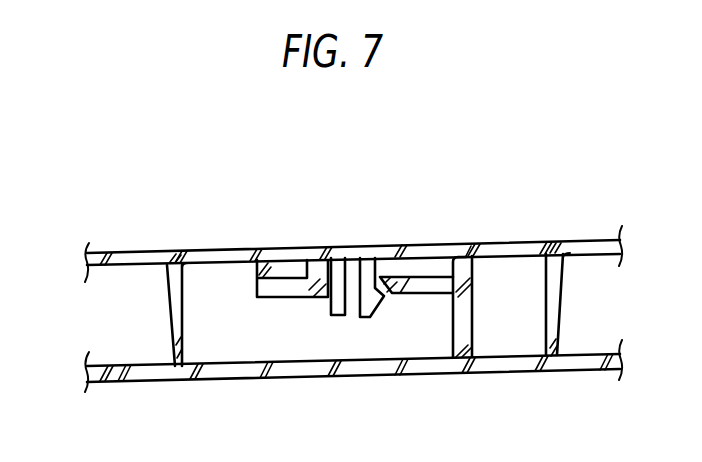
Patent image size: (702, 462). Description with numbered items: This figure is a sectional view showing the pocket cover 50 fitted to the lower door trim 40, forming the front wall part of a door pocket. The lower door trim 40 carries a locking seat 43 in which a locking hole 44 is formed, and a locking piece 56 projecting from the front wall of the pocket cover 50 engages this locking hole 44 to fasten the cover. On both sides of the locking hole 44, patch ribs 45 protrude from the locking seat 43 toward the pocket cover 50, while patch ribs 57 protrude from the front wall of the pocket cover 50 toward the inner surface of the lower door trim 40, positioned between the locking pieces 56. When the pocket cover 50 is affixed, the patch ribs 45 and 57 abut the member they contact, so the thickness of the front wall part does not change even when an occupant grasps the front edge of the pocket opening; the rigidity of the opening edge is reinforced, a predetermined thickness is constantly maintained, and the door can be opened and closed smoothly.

The lower door trim 40 is at (515, 373).
The locking seat 43 is at (460, 325).
The locking hole 44 is at (306, 260).
The patch rib 45 is at (243, 258).
The pocket cover 50 is at (508, 241).
The locking piece 56 is at (333, 313).
The patch rib 57 is at (173, 320).